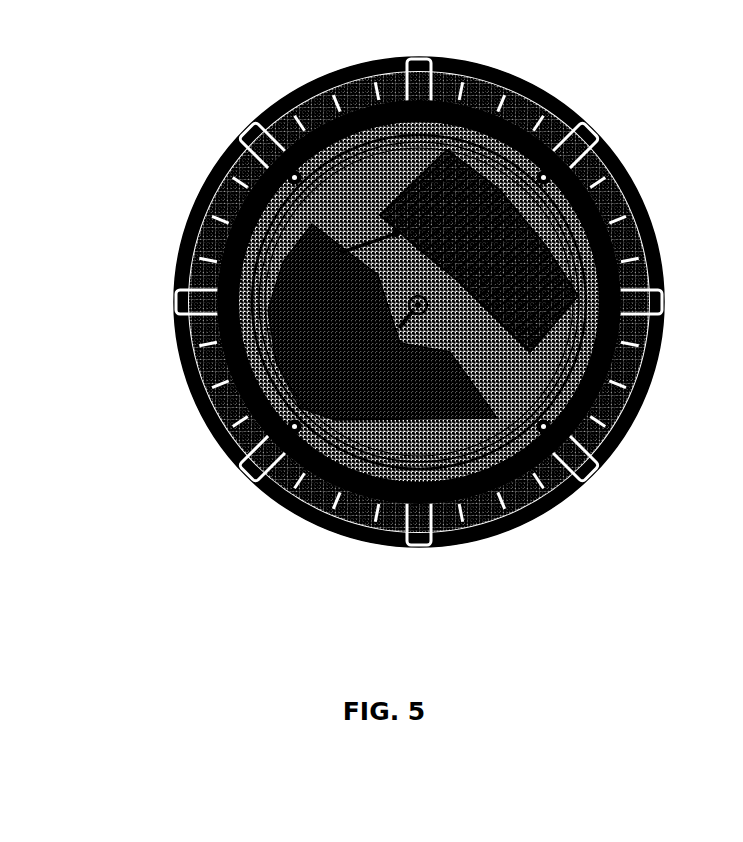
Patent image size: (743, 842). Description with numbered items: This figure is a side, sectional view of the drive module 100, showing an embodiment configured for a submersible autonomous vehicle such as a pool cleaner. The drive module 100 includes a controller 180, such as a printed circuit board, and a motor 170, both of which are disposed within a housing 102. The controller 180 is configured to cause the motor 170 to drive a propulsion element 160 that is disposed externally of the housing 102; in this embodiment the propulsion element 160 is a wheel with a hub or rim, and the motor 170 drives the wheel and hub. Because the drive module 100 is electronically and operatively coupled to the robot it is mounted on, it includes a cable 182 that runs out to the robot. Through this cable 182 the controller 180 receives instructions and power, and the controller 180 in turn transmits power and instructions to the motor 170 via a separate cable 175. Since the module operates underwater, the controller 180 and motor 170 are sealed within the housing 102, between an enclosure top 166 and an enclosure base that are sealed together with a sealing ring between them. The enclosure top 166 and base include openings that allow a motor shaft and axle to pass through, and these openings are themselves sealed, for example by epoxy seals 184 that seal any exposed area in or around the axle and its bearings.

The drive module 100 is at (558, 495).
The housing 102 is at (455, 490).
The propulsion element 160 is at (617, 437).
The enclosure top 166 is at (603, 182).
The motor 170 is at (513, 192).
The cable 175 is at (396, 233).
The controller 180 is at (267, 305).
The cable 182 is at (410, 310).
The epoxy seals 184 is at (405, 325).